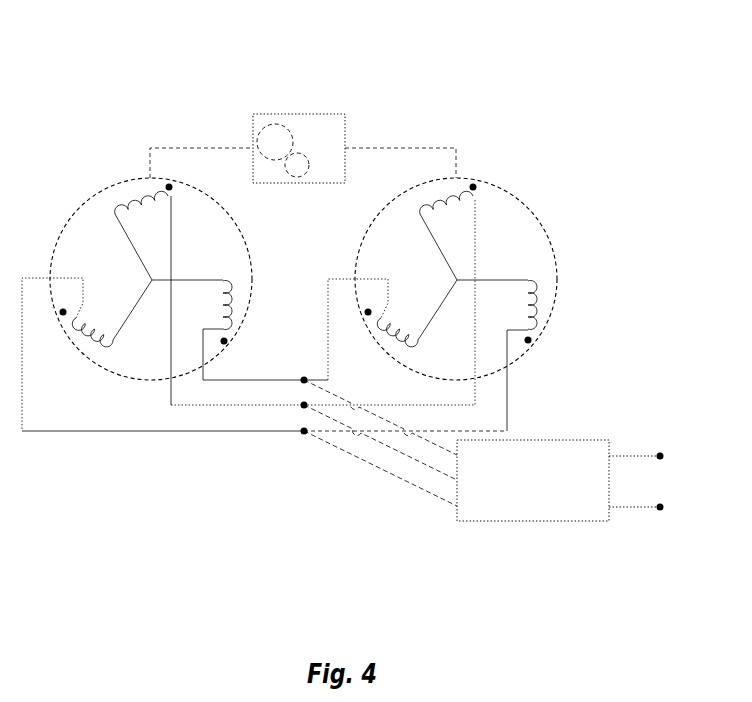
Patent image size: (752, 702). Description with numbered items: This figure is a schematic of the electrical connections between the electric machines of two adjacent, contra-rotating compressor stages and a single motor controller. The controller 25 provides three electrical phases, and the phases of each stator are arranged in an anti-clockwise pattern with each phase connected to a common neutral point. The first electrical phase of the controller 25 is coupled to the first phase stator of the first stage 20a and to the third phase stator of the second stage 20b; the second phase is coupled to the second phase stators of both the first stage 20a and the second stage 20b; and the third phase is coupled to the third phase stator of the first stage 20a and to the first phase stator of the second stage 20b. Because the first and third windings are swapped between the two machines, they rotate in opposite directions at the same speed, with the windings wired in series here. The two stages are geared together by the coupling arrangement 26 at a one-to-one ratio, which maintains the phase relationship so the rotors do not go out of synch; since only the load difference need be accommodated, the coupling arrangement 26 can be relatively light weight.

The first stage 20a is at (132, 133).
The second stage 20b is at (522, 153).
The coupling arrangement 26 is at (293, 113).
The controller 25 is at (587, 440).